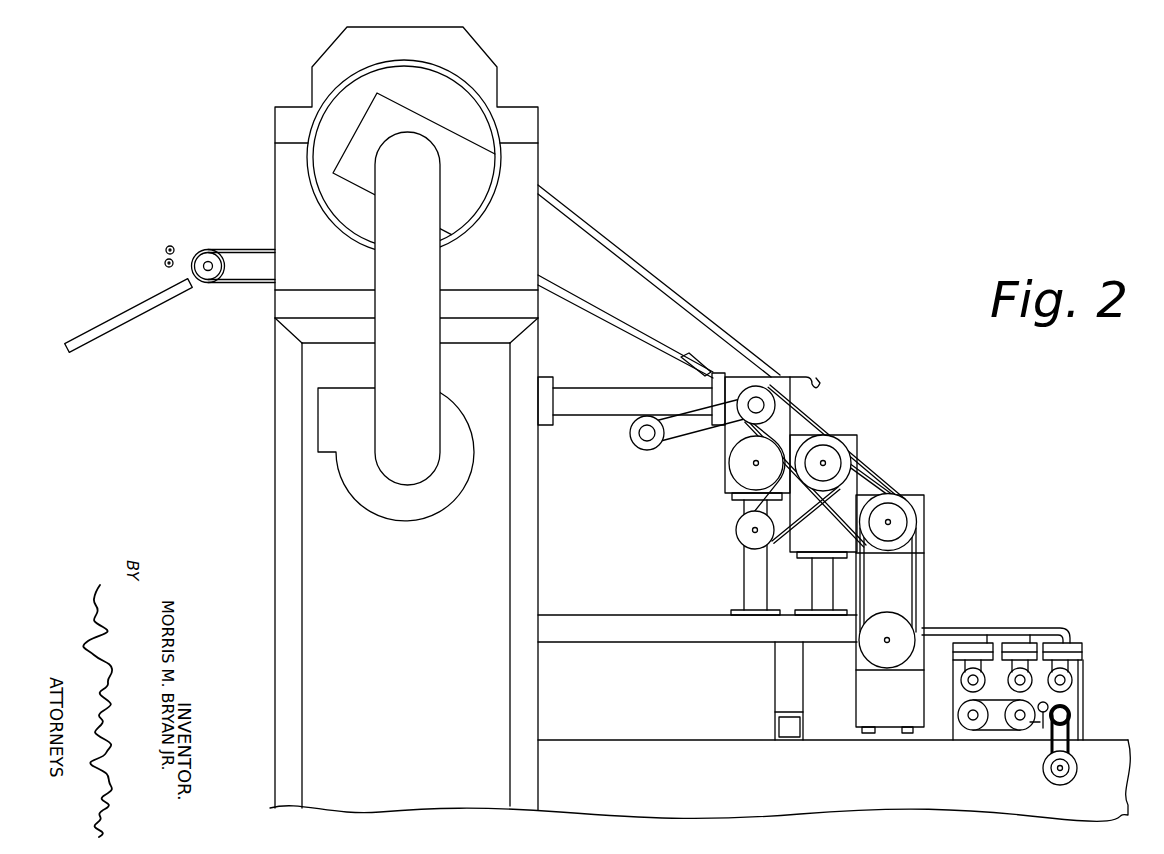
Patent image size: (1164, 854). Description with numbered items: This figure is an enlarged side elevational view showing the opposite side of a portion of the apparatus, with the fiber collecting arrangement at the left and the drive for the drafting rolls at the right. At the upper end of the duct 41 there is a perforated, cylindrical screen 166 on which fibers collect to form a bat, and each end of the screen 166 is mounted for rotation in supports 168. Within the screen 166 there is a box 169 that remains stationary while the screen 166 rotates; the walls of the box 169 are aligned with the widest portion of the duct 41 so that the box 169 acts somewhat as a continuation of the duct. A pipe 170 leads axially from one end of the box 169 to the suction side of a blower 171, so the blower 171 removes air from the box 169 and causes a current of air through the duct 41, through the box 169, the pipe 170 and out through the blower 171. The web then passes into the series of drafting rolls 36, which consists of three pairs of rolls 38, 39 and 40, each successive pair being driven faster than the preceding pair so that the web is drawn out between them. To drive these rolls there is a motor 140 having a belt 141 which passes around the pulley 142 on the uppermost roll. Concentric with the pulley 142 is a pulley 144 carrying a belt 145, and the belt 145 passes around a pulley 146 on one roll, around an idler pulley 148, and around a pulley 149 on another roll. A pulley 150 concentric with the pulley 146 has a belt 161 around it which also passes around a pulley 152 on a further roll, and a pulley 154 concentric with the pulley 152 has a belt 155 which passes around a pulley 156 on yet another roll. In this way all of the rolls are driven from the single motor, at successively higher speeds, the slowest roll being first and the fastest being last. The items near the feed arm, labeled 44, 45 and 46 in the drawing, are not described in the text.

The drafting rolls 36 is at (1079, 641).
The first pair of rolls 38 is at (959, 735).
The second pair of rolls 39 is at (1012, 735).
The third pair of rolls 40 is at (1049, 735).
The duct 41 is at (680, 270).
The feed belt arm 44 is at (228, 252).
The guide rollers 45 is at (167, 249).
The feed chute 46 is at (128, 299).
The motor 140 is at (634, 447).
The belt 141 is at (673, 440).
The pulley 142 is at (776, 402).
The pulley 144 is at (768, 380).
The belt 145 is at (803, 414).
The pulley 146 is at (835, 438).
The idler pulley 148 is at (733, 530).
The pulley 149 is at (731, 468).
The pulley 150 is at (840, 457).
The pulley 152 is at (906, 496).
The pulley 154 is at (902, 519).
The belt 155 is at (913, 568).
The pulley 156 is at (921, 617).
The belt 161 is at (871, 473).
The perforated cylindrical screen 166 is at (432, 60).
The supports 168 is at (549, 110).
The box 169 is at (447, 104).
The pipe 170 is at (490, 182).
The blower 171 is at (473, 393).